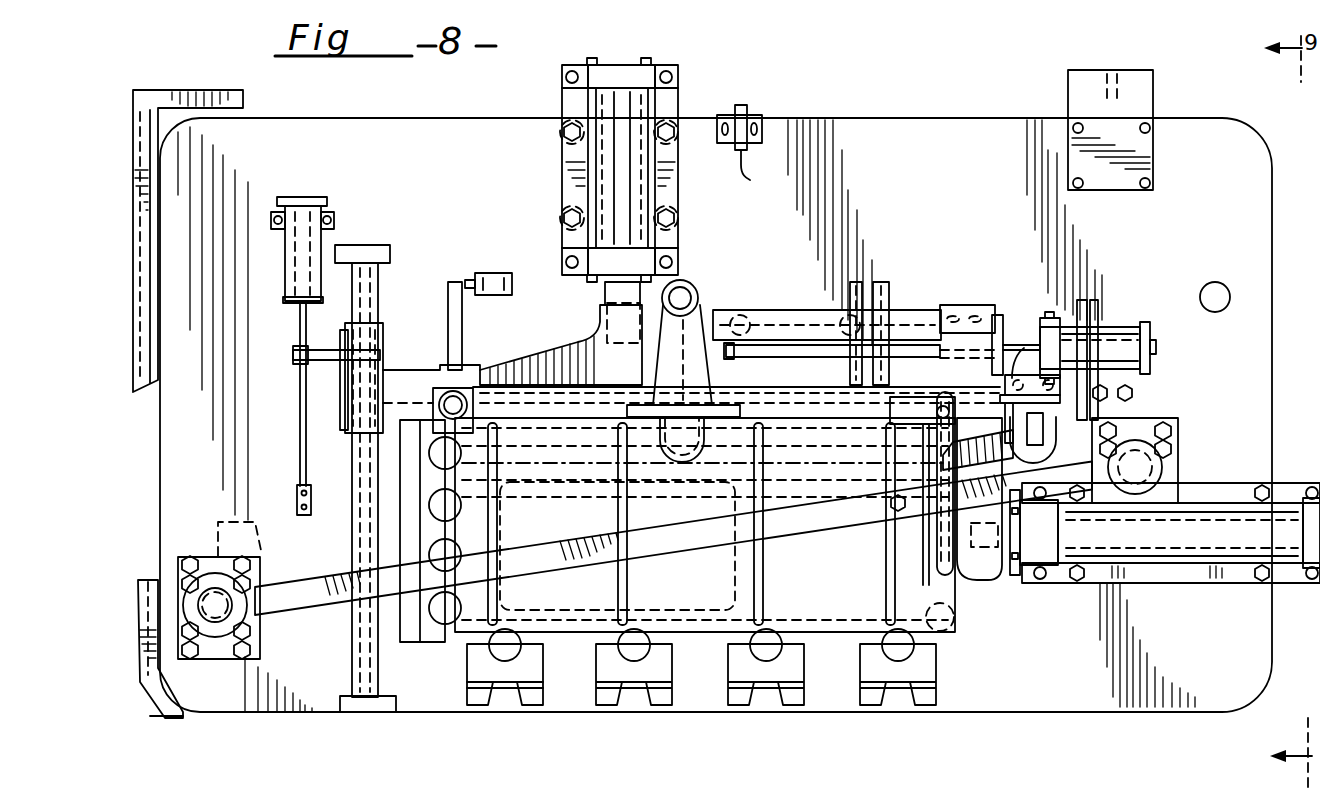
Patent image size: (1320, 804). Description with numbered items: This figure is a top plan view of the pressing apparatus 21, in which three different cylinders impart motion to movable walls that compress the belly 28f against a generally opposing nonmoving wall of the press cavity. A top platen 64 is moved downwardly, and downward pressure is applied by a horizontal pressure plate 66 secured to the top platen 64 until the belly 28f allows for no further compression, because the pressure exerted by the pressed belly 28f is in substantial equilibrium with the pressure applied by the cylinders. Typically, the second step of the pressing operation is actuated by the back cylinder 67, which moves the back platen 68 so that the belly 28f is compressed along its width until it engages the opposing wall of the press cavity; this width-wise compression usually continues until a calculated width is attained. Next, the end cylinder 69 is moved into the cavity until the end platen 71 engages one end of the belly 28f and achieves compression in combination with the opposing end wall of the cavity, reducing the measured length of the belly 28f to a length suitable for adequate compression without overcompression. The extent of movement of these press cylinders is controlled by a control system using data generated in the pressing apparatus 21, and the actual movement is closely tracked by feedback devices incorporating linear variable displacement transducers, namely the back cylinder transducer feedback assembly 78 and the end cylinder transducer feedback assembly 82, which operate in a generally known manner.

The pressing apparatus 21 is at (922, 106).
The back cylinder 67 is at (623, 126).
The back cylinder transducer feedback assembly 78 is at (272, 300).
The back platen 68 is at (533, 386).
The end cylinder transducer feedback assembly 82 is at (1109, 322).
The end cylinder 69 is at (1228, 522).
The horizontal pressure plate 66 is at (797, 499).
The top platen 64 is at (846, 533).
The end platen 71 is at (890, 565).
The belly 28f is at (742, 552).